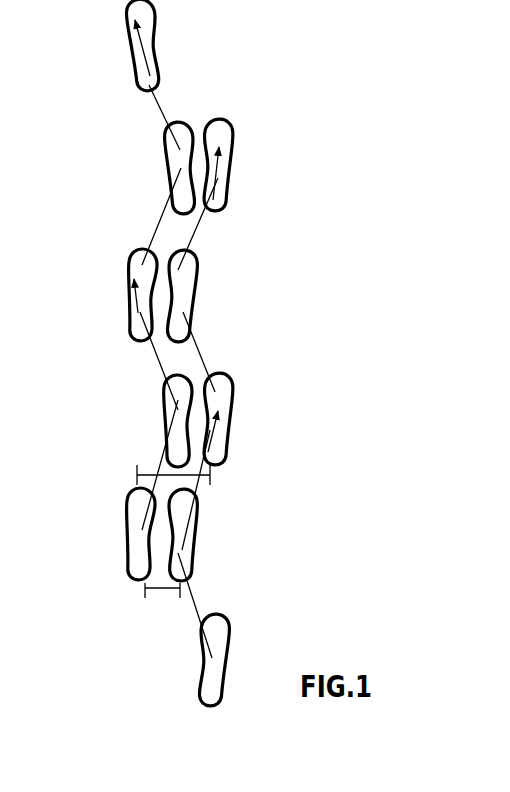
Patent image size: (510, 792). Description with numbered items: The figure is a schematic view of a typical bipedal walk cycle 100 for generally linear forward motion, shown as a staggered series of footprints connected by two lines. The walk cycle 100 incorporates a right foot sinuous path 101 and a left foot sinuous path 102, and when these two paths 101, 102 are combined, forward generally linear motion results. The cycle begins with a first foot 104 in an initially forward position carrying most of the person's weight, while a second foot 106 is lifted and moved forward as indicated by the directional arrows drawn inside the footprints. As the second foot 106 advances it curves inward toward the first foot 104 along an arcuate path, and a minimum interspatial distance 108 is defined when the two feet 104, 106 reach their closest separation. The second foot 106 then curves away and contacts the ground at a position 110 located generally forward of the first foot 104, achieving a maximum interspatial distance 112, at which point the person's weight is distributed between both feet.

The bipedal walk cycle 100 is at (297, 77).
The right foot sinuous path 101 is at (200, 227).
The left foot sinuous path 102 is at (157, 113).
The first foot 104 is at (130, 553).
The second foot 106 is at (230, 637).
The minimum interspatial distance 108 is at (162, 592).
The position 110 is at (239, 404).
The maximum interspatial distance 112 is at (142, 475).